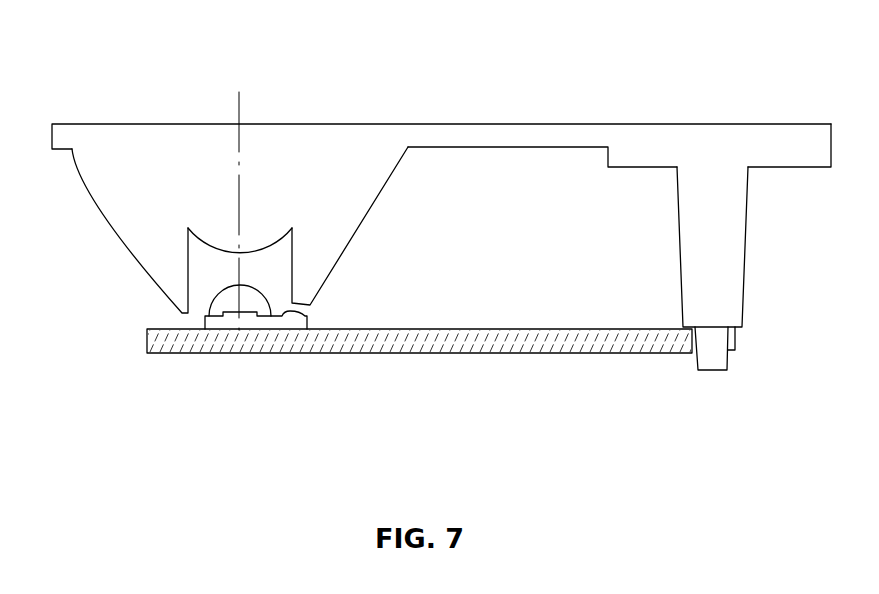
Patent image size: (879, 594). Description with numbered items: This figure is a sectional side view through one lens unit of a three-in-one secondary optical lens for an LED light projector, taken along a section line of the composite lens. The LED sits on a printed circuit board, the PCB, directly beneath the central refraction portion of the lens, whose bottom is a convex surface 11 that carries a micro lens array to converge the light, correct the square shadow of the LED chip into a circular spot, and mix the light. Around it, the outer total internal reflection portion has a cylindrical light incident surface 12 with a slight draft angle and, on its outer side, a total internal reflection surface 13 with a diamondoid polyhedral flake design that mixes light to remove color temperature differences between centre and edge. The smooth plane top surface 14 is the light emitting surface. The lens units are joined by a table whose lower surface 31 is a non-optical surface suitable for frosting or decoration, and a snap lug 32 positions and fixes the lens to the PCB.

The convex surface 11 is at (220, 247).
The cylindrical light incident surface 12 is at (293, 255).
The total internal reflection surface 13 is at (102, 212).
The top surface 14 is at (278, 124).
The lower surface of table 31 is at (765, 167).
The snap lug 32 is at (702, 233).
The element LED is at (232, 318).
The printed circuit board PCB is at (430, 333).